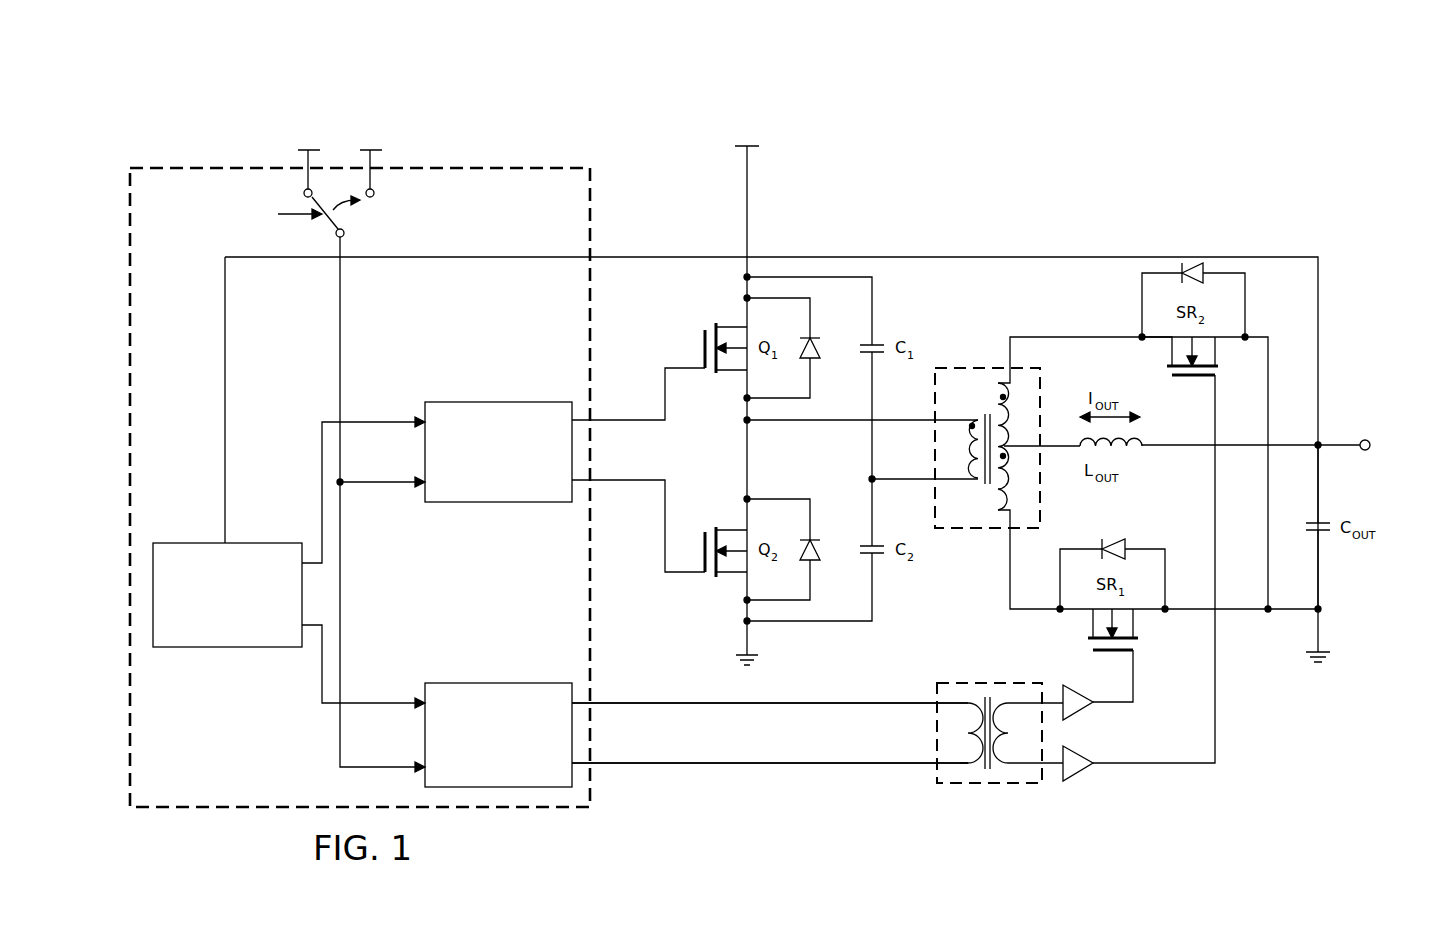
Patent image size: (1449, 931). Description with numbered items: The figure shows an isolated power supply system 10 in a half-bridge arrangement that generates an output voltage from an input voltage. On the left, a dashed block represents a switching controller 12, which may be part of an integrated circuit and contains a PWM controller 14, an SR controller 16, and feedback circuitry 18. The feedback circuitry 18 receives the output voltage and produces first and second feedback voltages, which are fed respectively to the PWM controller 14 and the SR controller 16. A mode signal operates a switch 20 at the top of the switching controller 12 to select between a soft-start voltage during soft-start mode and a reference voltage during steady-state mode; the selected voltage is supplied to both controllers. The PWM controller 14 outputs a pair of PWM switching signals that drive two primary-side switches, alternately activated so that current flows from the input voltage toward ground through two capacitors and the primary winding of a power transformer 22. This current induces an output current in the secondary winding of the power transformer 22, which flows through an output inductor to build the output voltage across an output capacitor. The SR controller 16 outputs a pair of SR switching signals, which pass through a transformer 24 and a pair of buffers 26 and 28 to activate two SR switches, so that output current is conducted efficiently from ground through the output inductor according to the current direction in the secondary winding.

The isolated power supply system 10 is at (1052, 188).
The switching controller 12 is at (203, 162).
The PWM controller 14 is at (497, 402).
The SR controller 16 is at (425, 735).
The feedback circuitry 18 is at (216, 648).
The switch 20 is at (392, 222).
The power transformer 22 is at (956, 358).
The transformer 24 is at (1020, 792).
The buffer 26 is at (1080, 712).
The buffer 28 is at (1080, 772).